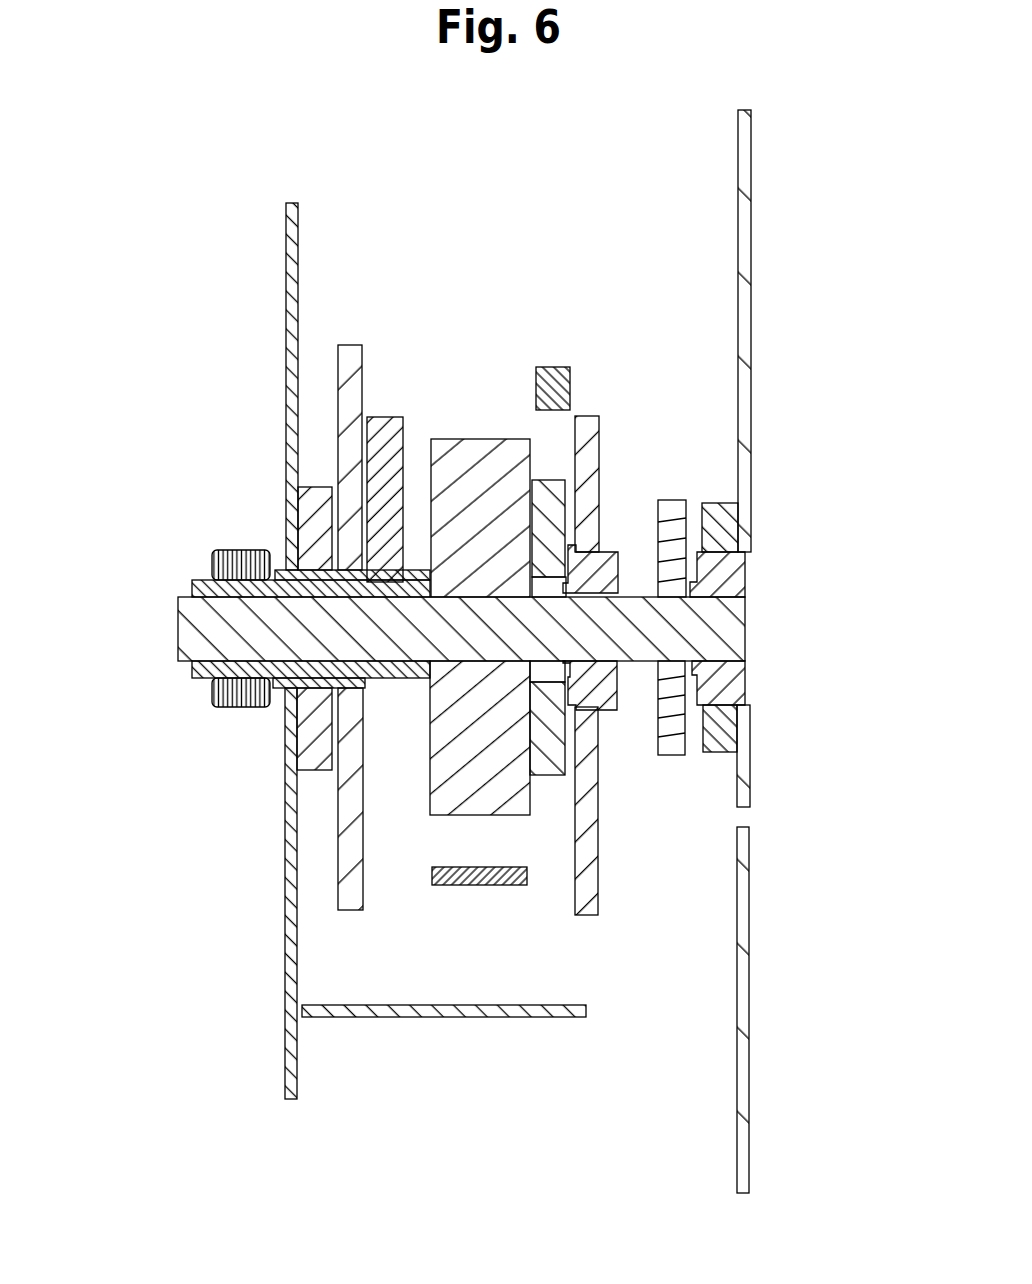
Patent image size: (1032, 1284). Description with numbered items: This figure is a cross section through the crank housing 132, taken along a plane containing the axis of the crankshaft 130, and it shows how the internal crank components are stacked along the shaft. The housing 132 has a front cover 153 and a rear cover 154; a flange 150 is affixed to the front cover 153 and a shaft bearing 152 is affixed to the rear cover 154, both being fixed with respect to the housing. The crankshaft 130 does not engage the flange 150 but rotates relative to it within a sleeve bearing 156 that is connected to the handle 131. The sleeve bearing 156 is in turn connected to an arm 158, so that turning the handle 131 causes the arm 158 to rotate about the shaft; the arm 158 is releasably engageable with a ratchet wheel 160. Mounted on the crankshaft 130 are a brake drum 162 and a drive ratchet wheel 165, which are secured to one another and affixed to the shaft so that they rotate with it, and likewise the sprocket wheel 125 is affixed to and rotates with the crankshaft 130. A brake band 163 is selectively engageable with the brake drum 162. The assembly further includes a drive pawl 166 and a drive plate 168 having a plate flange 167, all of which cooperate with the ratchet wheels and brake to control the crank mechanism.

The sprocket wheel 125 is at (668, 757).
The crankshaft 130 is at (745, 620).
The handle 131 is at (240, 707).
The crank housing 132 is at (760, 174).
The flange 150 is at (315, 487).
The shaft bearing 152 is at (713, 503).
The front cover 153 is at (285, 322).
The rear cover 154 is at (752, 295).
The sleeve bearing 156 is at (198, 603).
The arm 158 is at (385, 417).
The ratchet wheel 160 is at (348, 343).
The brake drum 162 is at (498, 438).
The brake band 163 is at (470, 888).
The drive ratchet wheel 165 is at (548, 778).
The drive pawl 166 is at (550, 366).
The plate flange 167 is at (607, 552).
The drive plate 168 is at (598, 822).